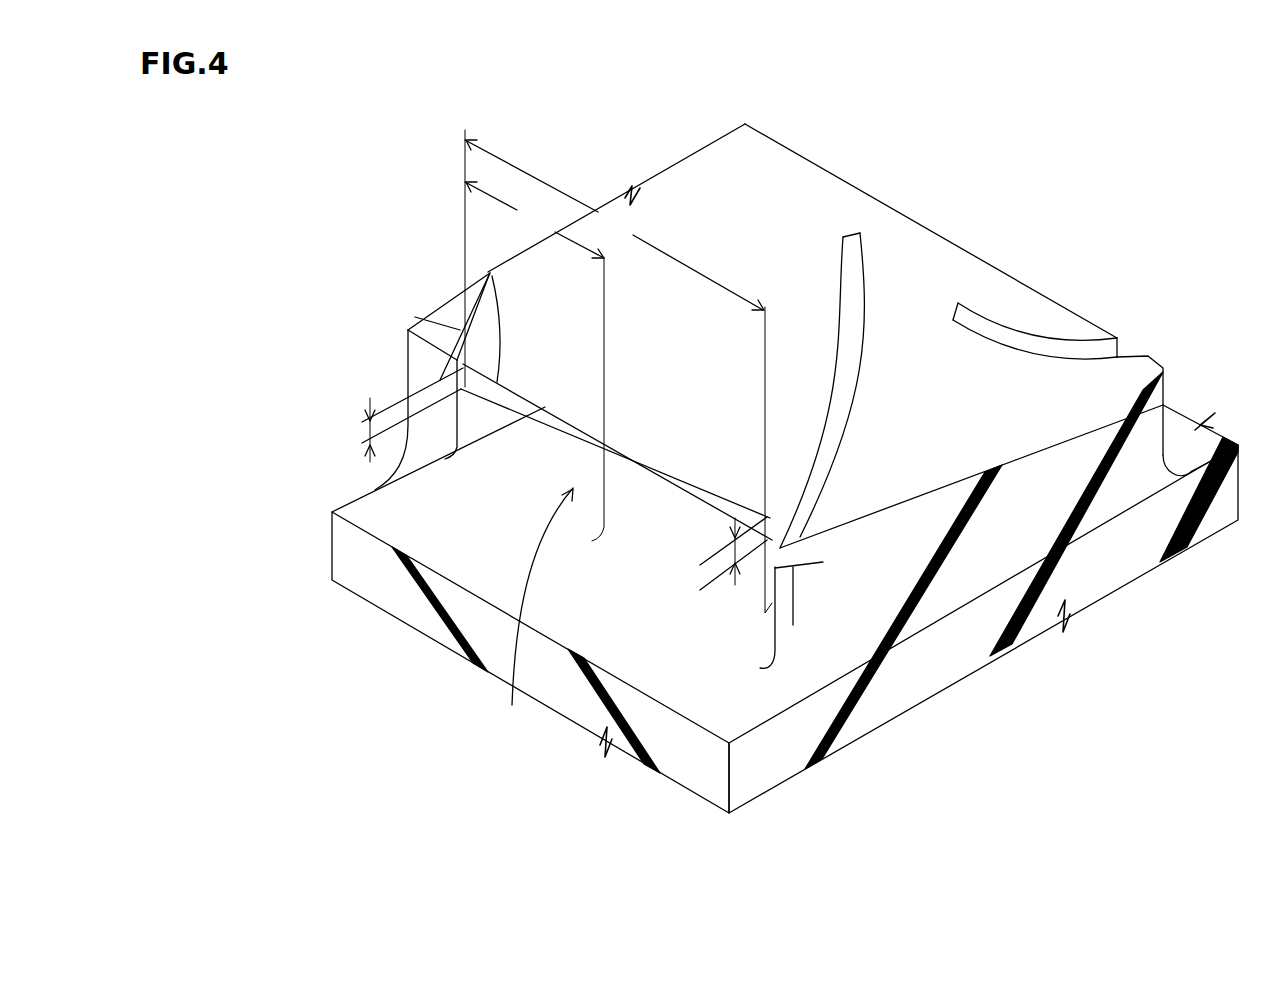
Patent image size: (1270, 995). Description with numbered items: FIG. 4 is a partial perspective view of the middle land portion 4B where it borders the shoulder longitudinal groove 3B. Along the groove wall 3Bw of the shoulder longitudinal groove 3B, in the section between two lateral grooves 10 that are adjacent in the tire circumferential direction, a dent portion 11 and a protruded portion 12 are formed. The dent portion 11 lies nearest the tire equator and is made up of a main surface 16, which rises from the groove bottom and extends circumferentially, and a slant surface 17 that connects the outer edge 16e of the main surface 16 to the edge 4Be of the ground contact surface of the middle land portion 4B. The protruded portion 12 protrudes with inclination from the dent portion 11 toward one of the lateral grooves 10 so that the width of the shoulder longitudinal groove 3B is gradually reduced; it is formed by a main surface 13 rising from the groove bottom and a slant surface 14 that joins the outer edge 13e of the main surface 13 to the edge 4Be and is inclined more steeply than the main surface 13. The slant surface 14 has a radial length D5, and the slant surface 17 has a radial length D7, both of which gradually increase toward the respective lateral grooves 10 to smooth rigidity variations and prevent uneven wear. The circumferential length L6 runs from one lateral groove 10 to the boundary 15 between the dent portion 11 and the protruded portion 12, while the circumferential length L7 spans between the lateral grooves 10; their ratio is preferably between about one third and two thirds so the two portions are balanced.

The shoulder longitudinal groove 3B is at (385, 517).
The groove wall 3Bw is at (573, 420).
The middle land portion 4B is at (937, 270).
The edge of ground contact surface 4Be is at (484, 270).
The lateral groove 10 is at (494, 284).
The dent portion 11 is at (370, 268).
The protruded portion 12 is at (422, 726).
The main surface 13 is at (525, 458).
The outer edge 13e is at (498, 393).
The slant surface 14 is at (540, 420).
The boundary 15 is at (534, 611).
The main surface 16 is at (420, 373).
The outer edge 16e is at (670, 525).
The slant surface 17 is at (428, 333).
The length of slant surface in tire radius direction D5 is at (370, 432).
The length of slant surface in tire radial direction D7 is at (742, 548).
The circumferential length L6 is at (534, 335).
The circumferential length L7 is at (618, 376).